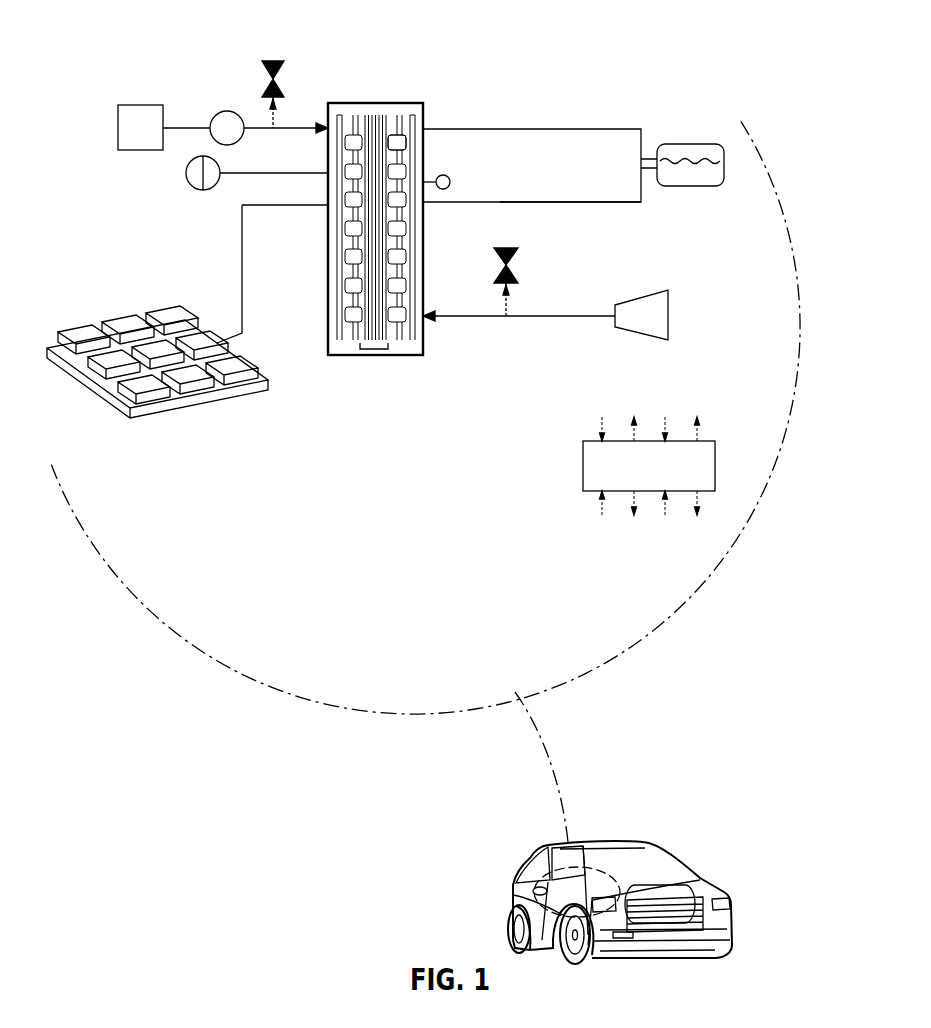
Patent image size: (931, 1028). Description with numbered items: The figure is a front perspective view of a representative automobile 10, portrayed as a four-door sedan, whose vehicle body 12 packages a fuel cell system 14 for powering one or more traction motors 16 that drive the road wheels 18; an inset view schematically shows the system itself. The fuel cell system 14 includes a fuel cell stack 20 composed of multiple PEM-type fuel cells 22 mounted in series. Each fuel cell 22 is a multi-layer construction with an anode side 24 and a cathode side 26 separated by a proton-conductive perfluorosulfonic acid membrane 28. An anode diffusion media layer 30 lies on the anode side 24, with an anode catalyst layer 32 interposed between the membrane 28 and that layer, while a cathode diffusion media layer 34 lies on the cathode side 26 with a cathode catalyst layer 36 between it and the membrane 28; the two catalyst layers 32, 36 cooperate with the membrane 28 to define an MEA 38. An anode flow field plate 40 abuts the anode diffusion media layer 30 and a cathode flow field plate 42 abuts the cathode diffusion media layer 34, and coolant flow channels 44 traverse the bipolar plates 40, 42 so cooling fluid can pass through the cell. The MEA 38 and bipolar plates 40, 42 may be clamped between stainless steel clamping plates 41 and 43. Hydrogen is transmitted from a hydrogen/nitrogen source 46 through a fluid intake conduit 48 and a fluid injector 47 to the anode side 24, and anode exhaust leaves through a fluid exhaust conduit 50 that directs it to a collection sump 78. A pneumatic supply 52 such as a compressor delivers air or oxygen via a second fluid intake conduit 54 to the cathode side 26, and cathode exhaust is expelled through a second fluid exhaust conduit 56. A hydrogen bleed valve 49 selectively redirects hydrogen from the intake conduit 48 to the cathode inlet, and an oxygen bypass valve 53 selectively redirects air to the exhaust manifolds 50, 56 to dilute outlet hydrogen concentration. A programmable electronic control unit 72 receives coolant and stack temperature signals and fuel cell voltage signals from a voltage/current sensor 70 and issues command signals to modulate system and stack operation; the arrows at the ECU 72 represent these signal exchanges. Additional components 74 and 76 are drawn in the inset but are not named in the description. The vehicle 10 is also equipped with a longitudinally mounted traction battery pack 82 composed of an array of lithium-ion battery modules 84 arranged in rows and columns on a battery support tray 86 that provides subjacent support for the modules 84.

The automobile 10 is at (622, 859).
The vehicle body 12 is at (700, 890).
The fuel cell system 14 is at (724, 48).
The traction motor 16 is at (668, 882).
The road wheels 18 is at (514, 913).
The fuel cell stack 20 is at (429, 99).
The fuel cell 22 is at (433, 104).
The anode side 24 is at (318, 155).
The cathode side 26 is at (436, 163).
The proton-conductive perfluorosulfonic acid membrane 28 is at (375, 115).
The anode diffusion media layer 30 is at (341, 113).
The anode catalyst layer 32 is at (370, 115).
The cathode diffusion media layer 34 is at (387, 113).
The cathode catalyst layer 36 is at (380, 115).
The MEA 38 is at (376, 349).
The anode flow field plate 40 is at (355, 340).
The clamping plate 41 is at (330, 124).
The cathode flow field plate 42 is at (399, 340).
The clamping plate 43 is at (416, 117).
The coolant flow channels 44 is at (398, 143).
The hydrogen/nitrogen source 46 is at (134, 105).
The fluid injector 47 is at (222, 111).
The fluid intake conduit 48 is at (182, 128).
The hydrogen bleed valve 49 is at (262, 81).
The fluid exhaust conduit 50 is at (607, 202).
The pneumatic supply 52 is at (654, 290).
The oxygen bypass valve 53 is at (516, 262).
The fluid intake conduit 54 is at (592, 316).
The fluid exhaust conduit 56 is at (617, 129).
The voltage/current sensor 70 is at (450, 185).
The electronic control unit 72 is at (583, 450).
The electrical line 74 is at (232, 175).
The sensor / meter 76 is at (186, 173).
The collection sump 78 is at (714, 144).
The traction battery pack 82 is at (146, 344).
The lithium-ion battery modules 84 is at (65, 348).
The battery support tray 86 is at (200, 398).